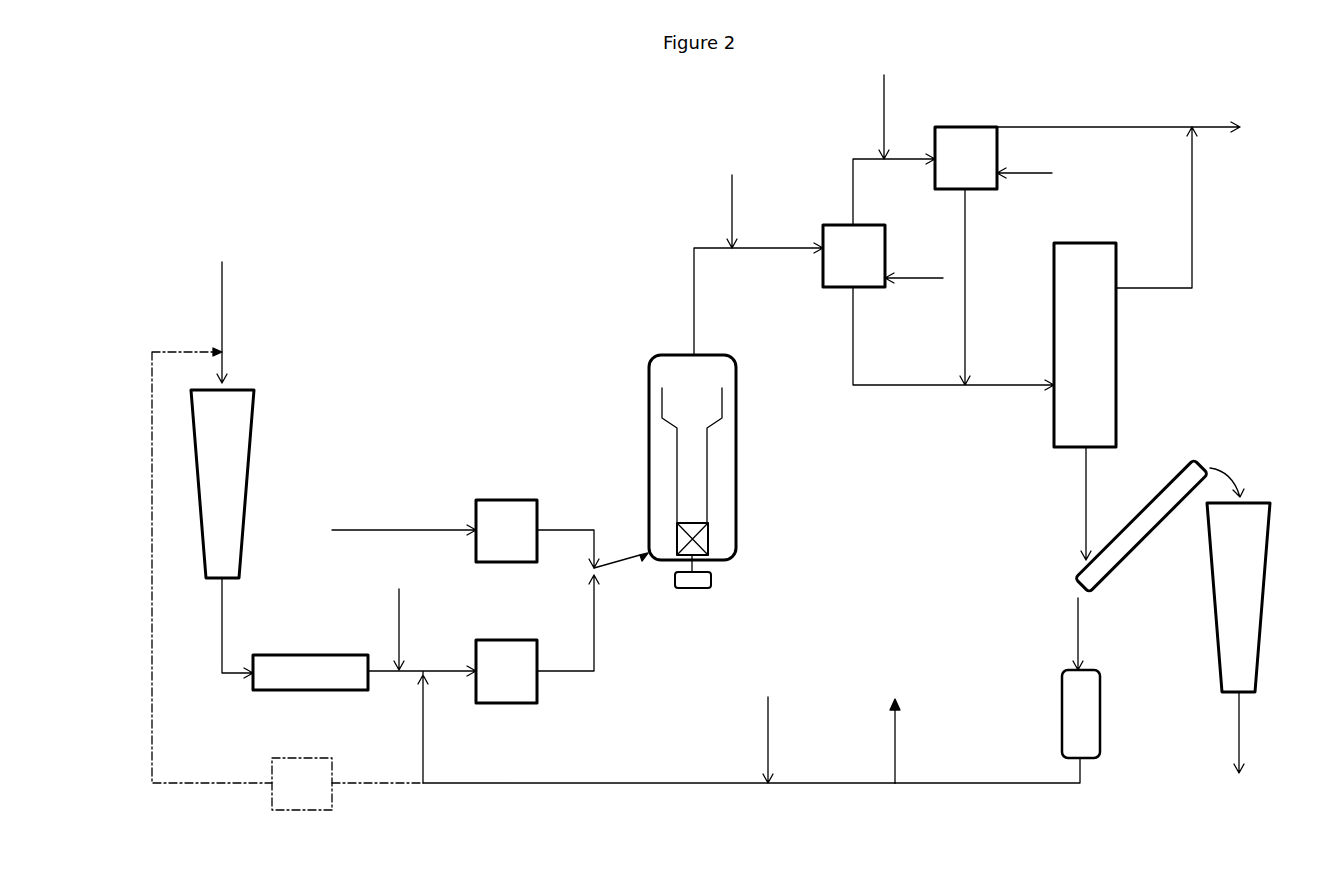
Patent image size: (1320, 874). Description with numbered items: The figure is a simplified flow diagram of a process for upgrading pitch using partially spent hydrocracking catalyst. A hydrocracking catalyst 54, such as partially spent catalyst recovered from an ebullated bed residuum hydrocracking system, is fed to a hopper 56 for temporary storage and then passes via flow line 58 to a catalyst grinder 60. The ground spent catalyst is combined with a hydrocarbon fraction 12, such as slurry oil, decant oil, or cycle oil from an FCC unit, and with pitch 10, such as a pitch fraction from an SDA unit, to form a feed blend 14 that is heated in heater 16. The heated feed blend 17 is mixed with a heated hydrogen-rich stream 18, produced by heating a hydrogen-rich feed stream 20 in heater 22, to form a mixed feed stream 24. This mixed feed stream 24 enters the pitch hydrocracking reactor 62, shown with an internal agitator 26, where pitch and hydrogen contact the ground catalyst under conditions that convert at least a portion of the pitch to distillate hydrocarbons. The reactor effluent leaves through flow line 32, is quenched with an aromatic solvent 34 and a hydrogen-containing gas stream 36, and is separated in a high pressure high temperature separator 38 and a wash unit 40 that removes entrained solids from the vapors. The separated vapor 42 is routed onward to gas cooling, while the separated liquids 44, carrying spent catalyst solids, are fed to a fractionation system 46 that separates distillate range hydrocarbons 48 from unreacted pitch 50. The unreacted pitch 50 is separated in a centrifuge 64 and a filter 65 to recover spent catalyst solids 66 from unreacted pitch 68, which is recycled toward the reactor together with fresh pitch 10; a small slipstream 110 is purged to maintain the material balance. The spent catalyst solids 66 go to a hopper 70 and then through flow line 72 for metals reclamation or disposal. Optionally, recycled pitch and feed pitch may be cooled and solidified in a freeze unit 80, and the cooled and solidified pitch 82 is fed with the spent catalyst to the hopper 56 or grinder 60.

The pitch 10 is at (761, 723).
The hydrocarbon fraction 12 is at (396, 616).
The feed blend 14 is at (454, 661).
The heater 16 is at (506, 671).
The heated feed blend 17 is at (593, 619).
The heated hydrogen-rich stream 18 is at (589, 526).
The hydrogen-rich feed stream 20 is at (385, 524).
The heater 22 is at (506, 531).
The mixed feed stream 24 is at (618, 565).
The agitator 26 is at (692, 489).
The flow line 32 is at (689, 253).
The aromatic solvent 34 is at (734, 191).
The hydrogen-containing gas stream 36 is at (926, 290).
The high pressure high temperature separator 38 is at (854, 256).
The wash unit 40 is at (966, 158).
The separated vapor 42 is at (1097, 119).
The separated liquids 44 is at (1025, 379).
The fractionation system 46 is at (1085, 345).
The distillate range hydrocarbons 48 is at (1189, 244).
The unreacted pitch 50 is at (1085, 503).
The hydrocracking catalyst 54 is at (221, 307).
The hopper 56 is at (222, 484).
The flow line 58 is at (223, 635).
The catalyst grinder 60 is at (305, 643).
The pitch hydrocracking reactor 62 is at (673, 349).
The centrifuge 64 is at (1176, 466).
The filter 65 is at (1057, 664).
The spent catalyst solids 66 is at (1226, 466).
The unreacted pitch 68 is at (1009, 773).
The hopper 70 is at (1238, 597).
The flow line 72 is at (1234, 733).
The freeze unit 80 is at (303, 753).
The cooled and solidified pitch 82 is at (221, 778).
The slipstream 110 is at (887, 723).